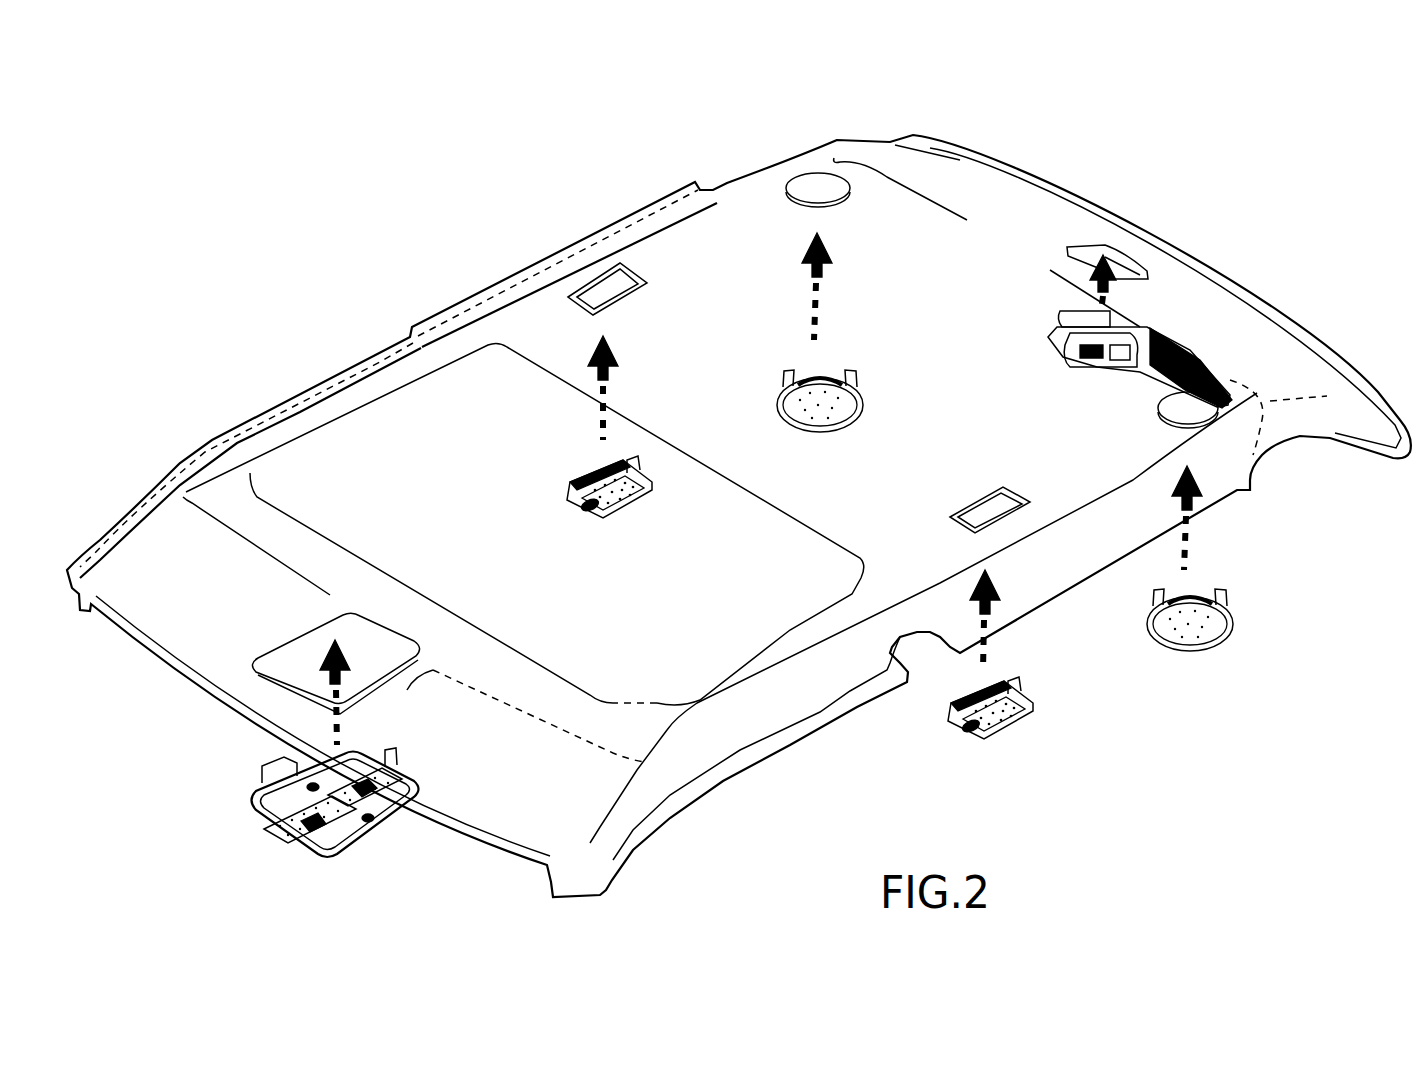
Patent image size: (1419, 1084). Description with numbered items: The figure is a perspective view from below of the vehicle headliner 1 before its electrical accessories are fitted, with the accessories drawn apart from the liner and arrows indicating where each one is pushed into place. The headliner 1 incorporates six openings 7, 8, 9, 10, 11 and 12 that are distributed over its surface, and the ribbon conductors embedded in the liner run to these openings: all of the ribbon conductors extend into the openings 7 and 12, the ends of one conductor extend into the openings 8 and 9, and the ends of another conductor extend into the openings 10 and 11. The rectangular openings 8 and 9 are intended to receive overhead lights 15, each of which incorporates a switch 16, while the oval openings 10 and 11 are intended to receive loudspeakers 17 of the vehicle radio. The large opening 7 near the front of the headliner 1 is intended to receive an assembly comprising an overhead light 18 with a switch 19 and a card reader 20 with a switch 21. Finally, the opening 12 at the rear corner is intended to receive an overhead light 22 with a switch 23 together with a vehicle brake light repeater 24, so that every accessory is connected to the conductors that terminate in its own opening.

The roof lining (headliner) 1 is at (1032, 218).
The opening 7 is at (303, 667).
The opening 8 is at (610, 290).
The opening 9 is at (997, 507).
The opening 10 is at (813, 180).
The opening 11 is at (1193, 418).
The opening 12 is at (1140, 268).
The overhead light 15 is at (625, 503).
The switch 16 is at (590, 510).
The loudspeaker 17 is at (822, 420).
The overhead light 18 is at (338, 840).
The switch 19 is at (305, 833).
The card reader 20 is at (387, 803).
The switch 21 is at (360, 803).
The overhead light 22 is at (1107, 370).
The switch 23 is at (1083, 357).
The vehicle brake light repeater 24 is at (1223, 373).